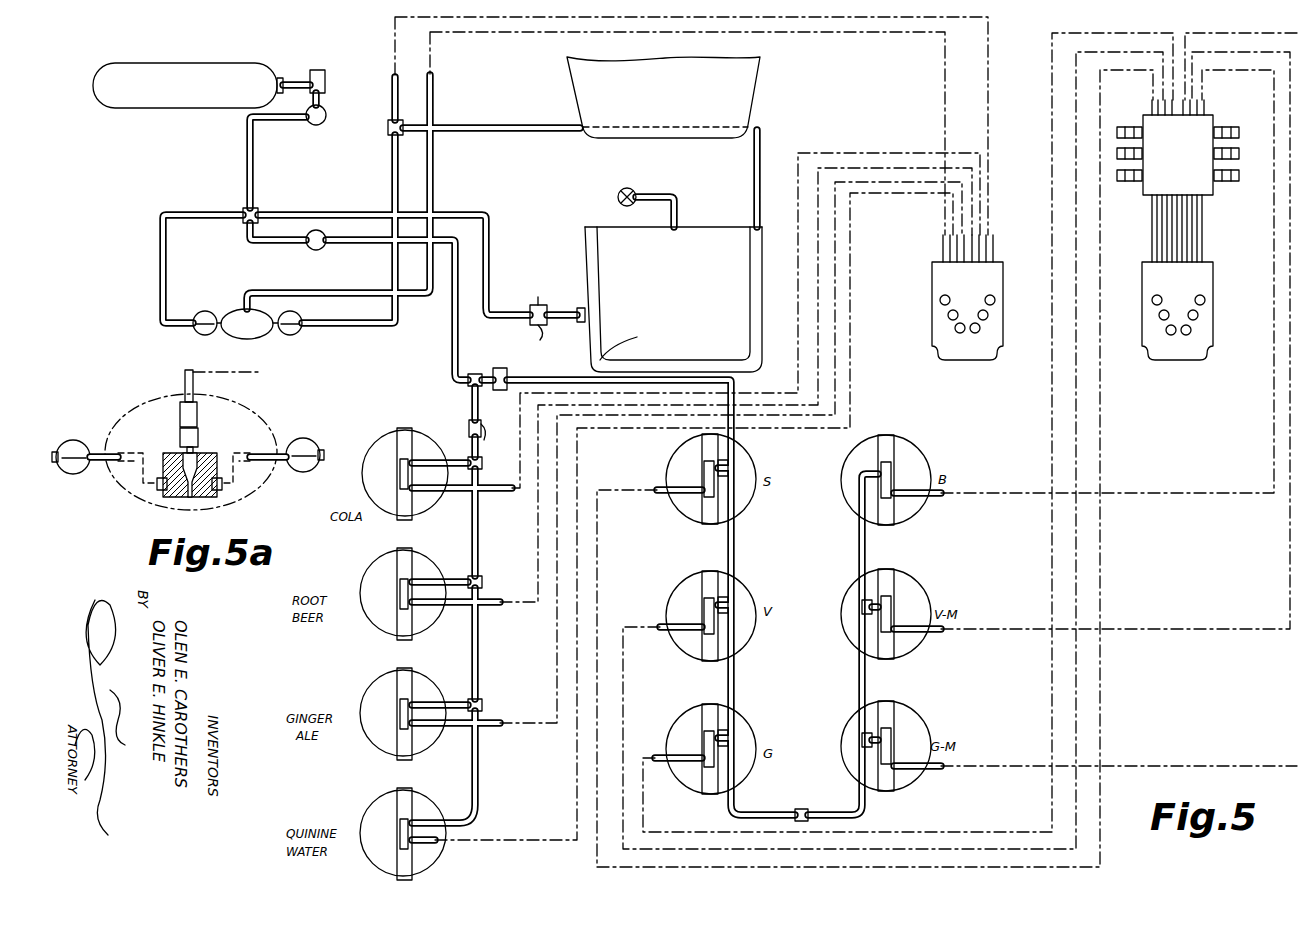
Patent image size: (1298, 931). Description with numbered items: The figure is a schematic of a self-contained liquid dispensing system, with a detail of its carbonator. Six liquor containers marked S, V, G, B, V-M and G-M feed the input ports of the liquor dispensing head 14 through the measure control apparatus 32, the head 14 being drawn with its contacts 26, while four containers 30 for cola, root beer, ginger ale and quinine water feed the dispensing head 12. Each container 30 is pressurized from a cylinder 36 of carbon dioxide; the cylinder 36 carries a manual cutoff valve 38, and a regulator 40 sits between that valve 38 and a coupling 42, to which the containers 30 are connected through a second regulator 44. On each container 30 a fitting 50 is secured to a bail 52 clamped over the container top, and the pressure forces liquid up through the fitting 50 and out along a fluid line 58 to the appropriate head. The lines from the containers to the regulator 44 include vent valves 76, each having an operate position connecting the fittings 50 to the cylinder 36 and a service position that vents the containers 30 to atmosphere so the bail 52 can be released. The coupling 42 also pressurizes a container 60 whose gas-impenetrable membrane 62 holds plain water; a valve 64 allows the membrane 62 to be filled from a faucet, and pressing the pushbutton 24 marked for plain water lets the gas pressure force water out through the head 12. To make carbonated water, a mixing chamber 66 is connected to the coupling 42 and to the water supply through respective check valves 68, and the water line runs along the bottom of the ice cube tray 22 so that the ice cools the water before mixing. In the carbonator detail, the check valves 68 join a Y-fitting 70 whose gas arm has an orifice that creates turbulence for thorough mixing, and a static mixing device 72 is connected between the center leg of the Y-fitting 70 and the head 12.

In FIG. 5, the dispensing head 12 is at (932, 302).
In FIG. 5, the liquor dispensing head 14 is at (1213, 297).
In FIG. 5, the ice cube tray 22 is at (752, 105).
In FIG. 5, the pushbutton 24 is at (990, 296).
In FIG. 5, the receptacle contacts 26 is at (1203, 296).
In FIG. 5, the container 30 is at (366, 480).
In FIG. 5, the measure control apparatus 32 is at (1185, 181).
In FIG. 5, the cylinder of carbon dioxide 36 is at (222, 63).
In FIG. 5, the manual cutoff valve 38 is at (316, 72).
In FIG. 5, the regulator 40 is at (327, 112).
In FIG. 5, the coupling 42 is at (258, 210).
In FIG. 5, the regulator 44 is at (326, 241).
In FIG. 5, the fitting 50 is at (398, 482).
In FIG. 5, the bail 52 is at (410, 520).
In FIG. 5, the fluid line 58 is at (490, 488).
In FIG. 5, the container 60 is at (585, 262).
In FIG. 5, the membrane 62 is at (735, 358).
In FIG. 5, the valve 64 is at (618, 197).
In FIG. 5, the mixing chamber 66 is at (247, 339).
In FIG. 5A, the mixing chamber 66 is at (258, 428).
In FIG. 5, the check valve 68 is at (207, 311).
In FIG. 5A, the check valve 68 is at (72, 440).
In FIG. 5A, the Y-fitting 70 is at (170, 500).
In FIG. 5A, the mixing device 72 is at (200, 420).
In FIG. 5, the vent valve 76 is at (505, 368).